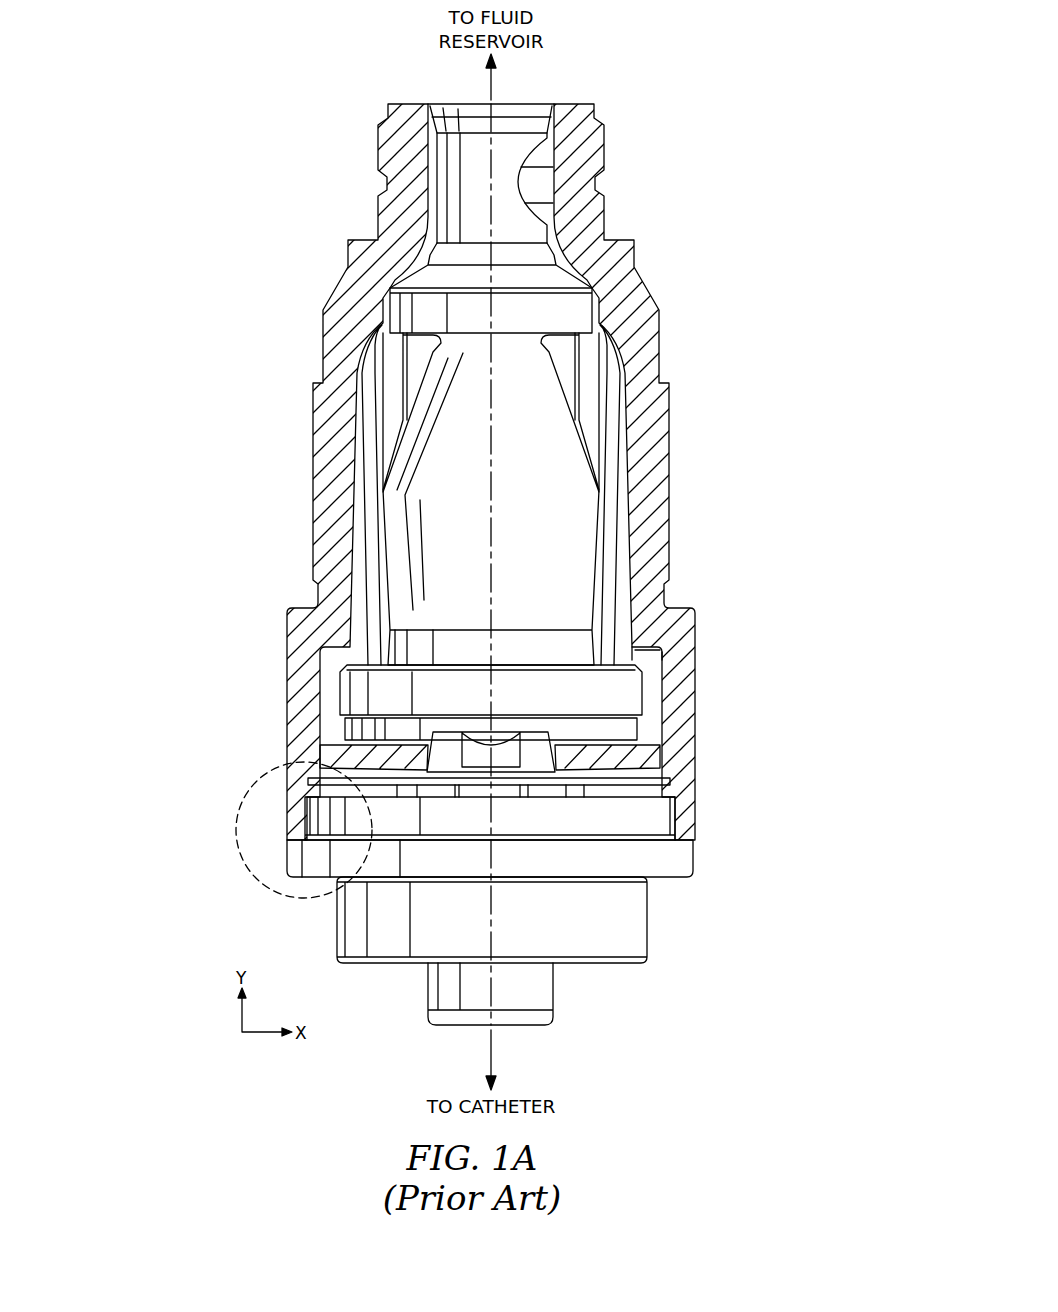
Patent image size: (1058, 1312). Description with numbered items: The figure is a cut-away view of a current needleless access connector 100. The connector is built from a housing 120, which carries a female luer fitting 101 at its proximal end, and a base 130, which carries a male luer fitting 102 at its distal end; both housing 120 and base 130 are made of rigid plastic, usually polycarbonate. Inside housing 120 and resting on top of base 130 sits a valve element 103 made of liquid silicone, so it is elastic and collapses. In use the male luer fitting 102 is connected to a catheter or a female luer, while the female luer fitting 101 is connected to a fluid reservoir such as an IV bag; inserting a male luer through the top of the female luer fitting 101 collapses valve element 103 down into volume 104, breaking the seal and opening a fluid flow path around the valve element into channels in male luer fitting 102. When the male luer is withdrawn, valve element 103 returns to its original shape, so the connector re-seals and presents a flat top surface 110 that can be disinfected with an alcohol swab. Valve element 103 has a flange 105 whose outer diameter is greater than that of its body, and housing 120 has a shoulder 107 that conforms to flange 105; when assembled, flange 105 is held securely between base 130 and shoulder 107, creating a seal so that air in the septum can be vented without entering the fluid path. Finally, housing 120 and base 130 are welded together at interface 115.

The needleless access connector 100 is at (323, 106).
The female luer fitting 101 is at (606, 201).
The male luer fitting 102 is at (553, 993).
The valve element 103 is at (588, 441).
The volume 104 is at (622, 368).
The flange 105 is at (627, 690).
The shoulder 107 is at (642, 650).
The top surface 110 is at (512, 102).
The interface 115 is at (262, 776).
The housing 120 is at (313, 554).
The base 130 is at (647, 917).